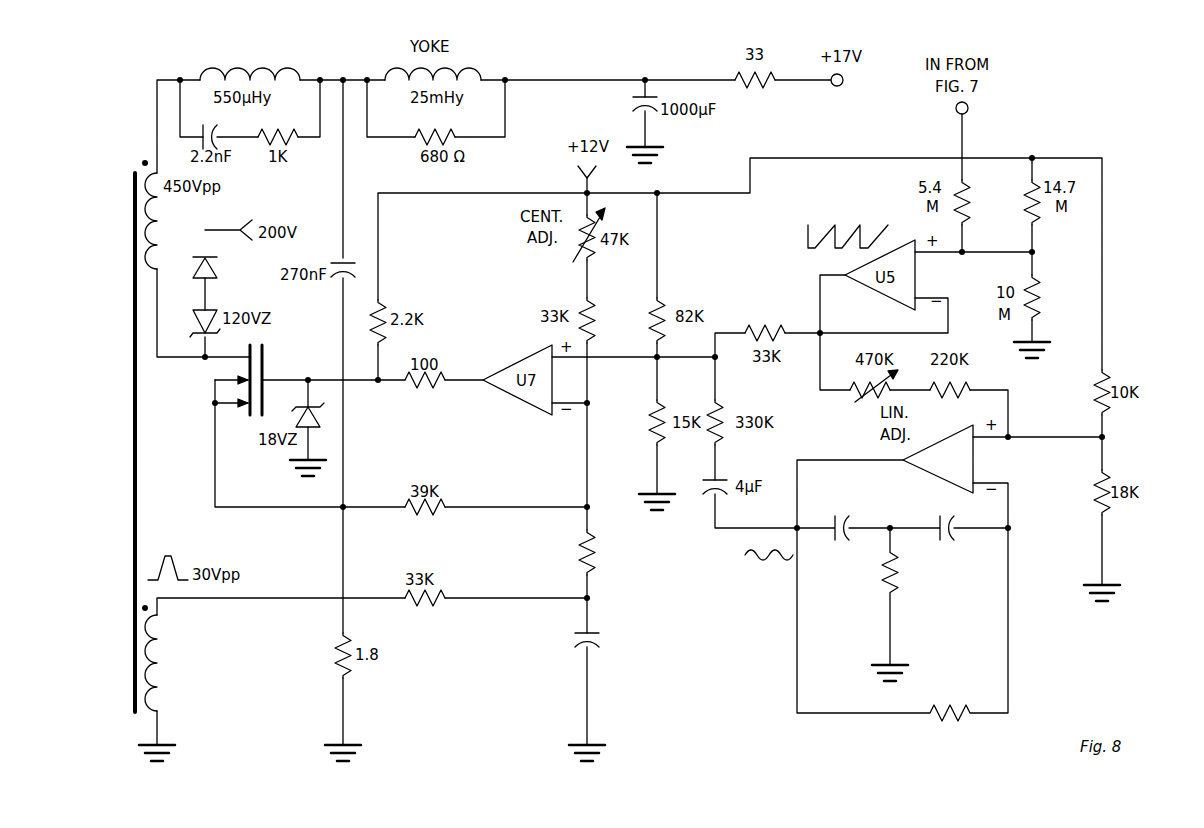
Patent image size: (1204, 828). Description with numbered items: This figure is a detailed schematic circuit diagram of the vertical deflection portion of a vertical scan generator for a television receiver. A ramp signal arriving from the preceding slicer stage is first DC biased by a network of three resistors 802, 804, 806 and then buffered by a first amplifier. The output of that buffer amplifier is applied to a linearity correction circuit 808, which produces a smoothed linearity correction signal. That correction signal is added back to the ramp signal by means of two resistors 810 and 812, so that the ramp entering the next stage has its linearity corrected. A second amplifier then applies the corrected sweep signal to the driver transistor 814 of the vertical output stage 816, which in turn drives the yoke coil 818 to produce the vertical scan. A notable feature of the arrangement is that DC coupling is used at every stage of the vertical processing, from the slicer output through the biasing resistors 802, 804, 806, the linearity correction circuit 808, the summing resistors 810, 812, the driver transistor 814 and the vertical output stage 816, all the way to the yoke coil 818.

The resistor 802 is at (965, 212).
The resistor 804 is at (1026, 215).
The resistor 806 is at (1037, 300).
The linearity correction circuit 808 is at (866, 756).
The resistor 810 is at (768, 324).
The resistor 812 is at (726, 420).
The driver transistor 814 is at (264, 354).
The vertical output stage 816 is at (224, 678).
The yoke coil 818 is at (489, 72).